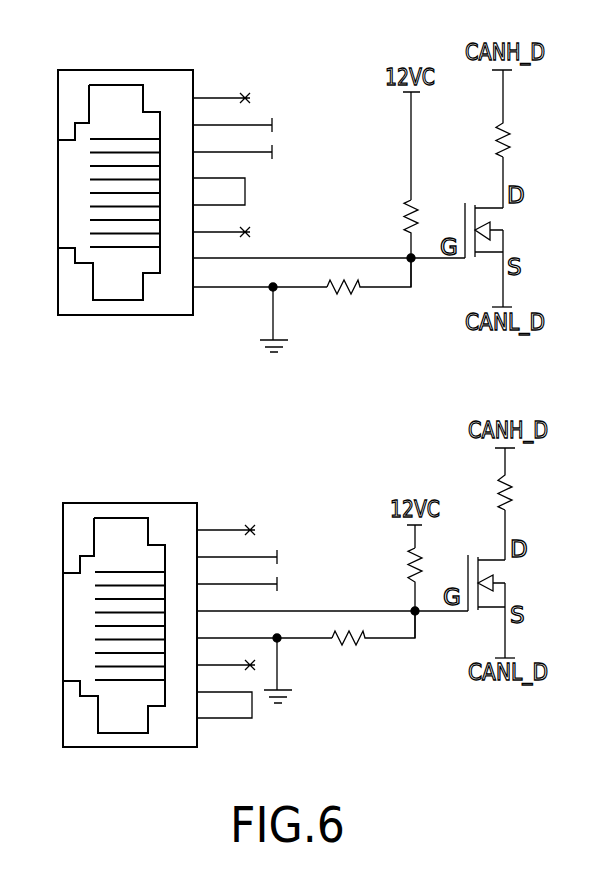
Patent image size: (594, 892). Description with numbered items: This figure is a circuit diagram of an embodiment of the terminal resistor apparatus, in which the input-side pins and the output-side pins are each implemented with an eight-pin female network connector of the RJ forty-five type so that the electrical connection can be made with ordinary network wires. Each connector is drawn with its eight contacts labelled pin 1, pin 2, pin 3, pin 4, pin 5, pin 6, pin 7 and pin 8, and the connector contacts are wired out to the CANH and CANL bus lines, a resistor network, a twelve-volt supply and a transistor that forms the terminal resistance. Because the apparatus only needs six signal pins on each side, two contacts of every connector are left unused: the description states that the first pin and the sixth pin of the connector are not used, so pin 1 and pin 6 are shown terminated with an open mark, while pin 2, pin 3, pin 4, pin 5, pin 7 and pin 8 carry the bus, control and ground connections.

The connector pin 1 is at (224, 302).
The connector pin 2 (CANH_D) 2 is at (278, 332).
The connector pin 3 (CANL_D) 3 is at (278, 359).
The connector pin 4 is at (330, 382).
The connector pin 5 is at (264, 409).
The connector pin 6 is at (224, 437).
The connector pin 7 is at (329, 474).
The connector pin 8 is at (260, 490).